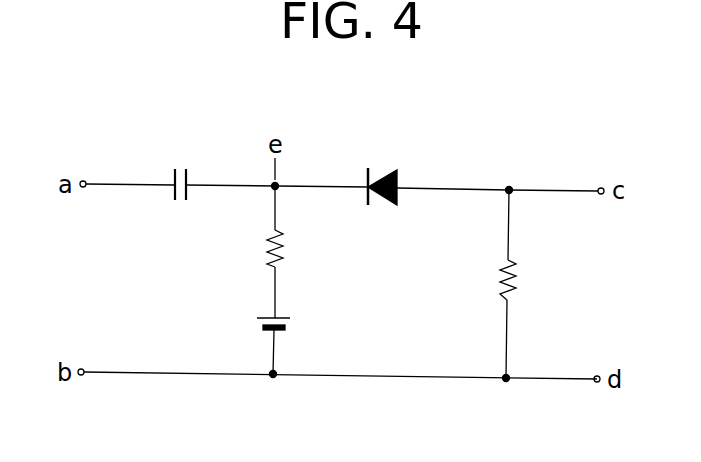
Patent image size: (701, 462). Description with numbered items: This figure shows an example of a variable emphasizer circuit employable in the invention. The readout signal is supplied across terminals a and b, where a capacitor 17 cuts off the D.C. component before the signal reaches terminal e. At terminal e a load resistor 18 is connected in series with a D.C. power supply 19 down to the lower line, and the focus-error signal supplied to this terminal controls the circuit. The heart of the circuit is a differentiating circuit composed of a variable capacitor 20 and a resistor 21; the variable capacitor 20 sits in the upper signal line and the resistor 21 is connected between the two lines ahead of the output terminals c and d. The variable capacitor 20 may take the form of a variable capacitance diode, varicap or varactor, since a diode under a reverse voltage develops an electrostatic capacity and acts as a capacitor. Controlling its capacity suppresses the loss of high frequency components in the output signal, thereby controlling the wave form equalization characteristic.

The capacitor 17 is at (178, 207).
The load resistor 18 is at (284, 250).
The D.C. power supply 19 is at (292, 321).
The variable capacitor 20 is at (383, 178).
The resistor 21 is at (516, 281).